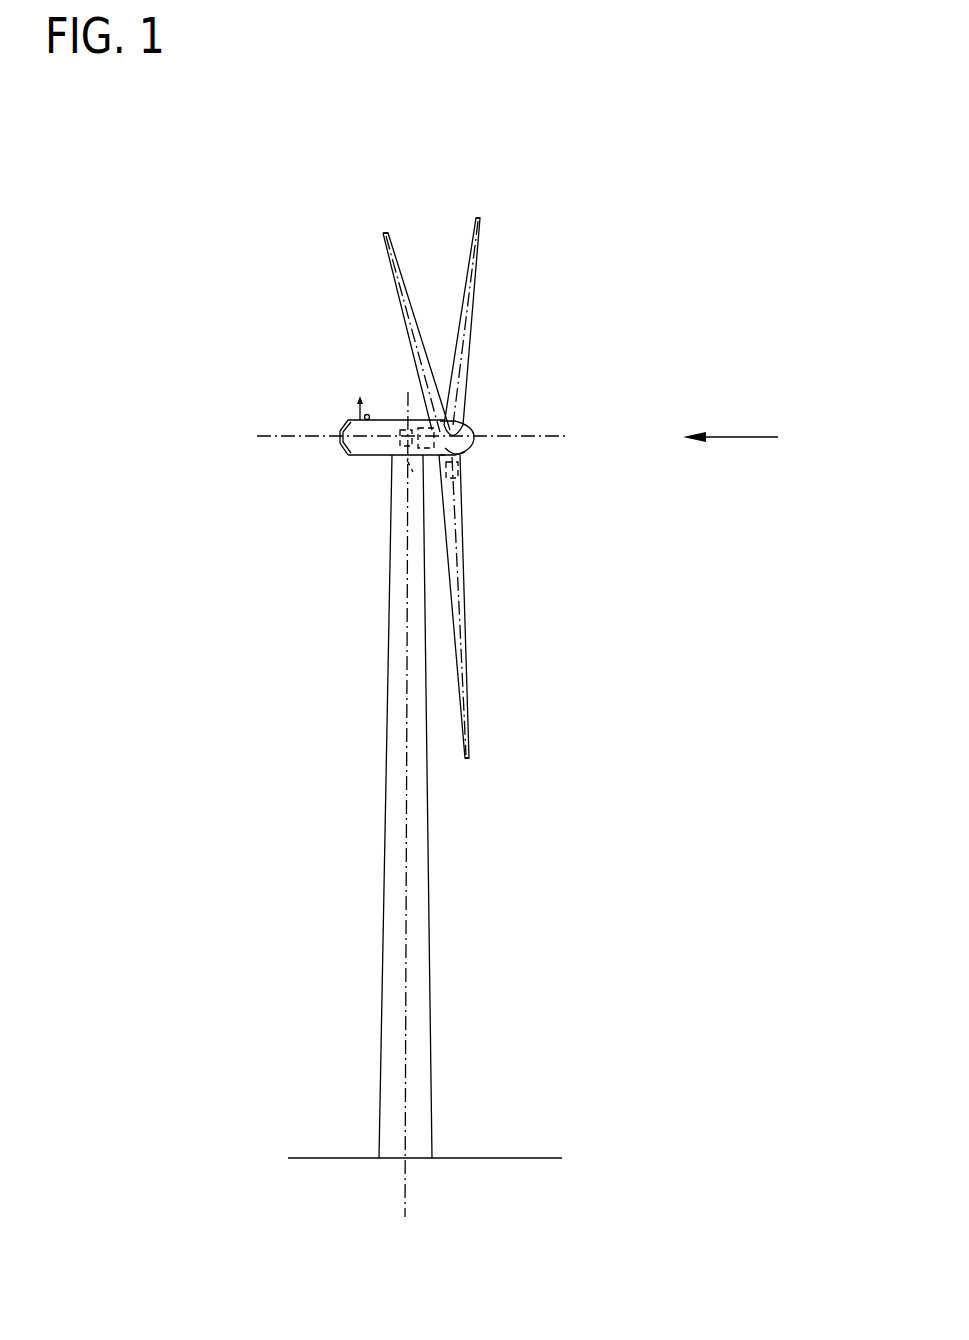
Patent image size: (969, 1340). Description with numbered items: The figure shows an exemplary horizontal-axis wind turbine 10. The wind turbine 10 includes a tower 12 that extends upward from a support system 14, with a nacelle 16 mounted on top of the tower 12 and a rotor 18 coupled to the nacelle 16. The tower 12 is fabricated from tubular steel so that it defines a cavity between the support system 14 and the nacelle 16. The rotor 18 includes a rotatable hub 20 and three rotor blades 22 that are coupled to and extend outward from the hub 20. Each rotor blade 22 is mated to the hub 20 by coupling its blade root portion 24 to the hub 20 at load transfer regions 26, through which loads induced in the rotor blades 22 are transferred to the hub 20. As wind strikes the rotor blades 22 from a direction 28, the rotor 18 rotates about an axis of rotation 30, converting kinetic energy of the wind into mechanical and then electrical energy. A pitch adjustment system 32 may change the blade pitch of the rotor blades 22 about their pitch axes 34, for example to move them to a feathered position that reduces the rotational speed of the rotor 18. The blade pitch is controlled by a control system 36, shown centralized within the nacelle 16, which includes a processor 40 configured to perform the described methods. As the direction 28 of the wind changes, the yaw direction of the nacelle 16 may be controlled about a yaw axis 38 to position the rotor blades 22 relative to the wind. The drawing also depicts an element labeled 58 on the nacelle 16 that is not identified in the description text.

The wind turbine 10 is at (185, 235).
The tower 12 is at (378, 940).
The support system 14 is at (342, 1157).
The nacelle 16 is at (362, 455).
The rotor 18 is at (497, 345).
The rotatable hub 20 is at (470, 432).
The rotor blade 22 is at (478, 258).
The blade root portion 24 is at (460, 534).
The load transfer regions 26 is at (468, 458).
The direction 28 is at (745, 436).
The axis of rotation 30 is at (565, 437).
The pitch adjustment system 32 is at (454, 478).
The pitch axis 34 is at (383, 236).
The control system 36 is at (405, 478).
The yaw axis 38 is at (407, 845).
The processor 40 is at (412, 392).
The wind sensor 58 is at (356, 414).